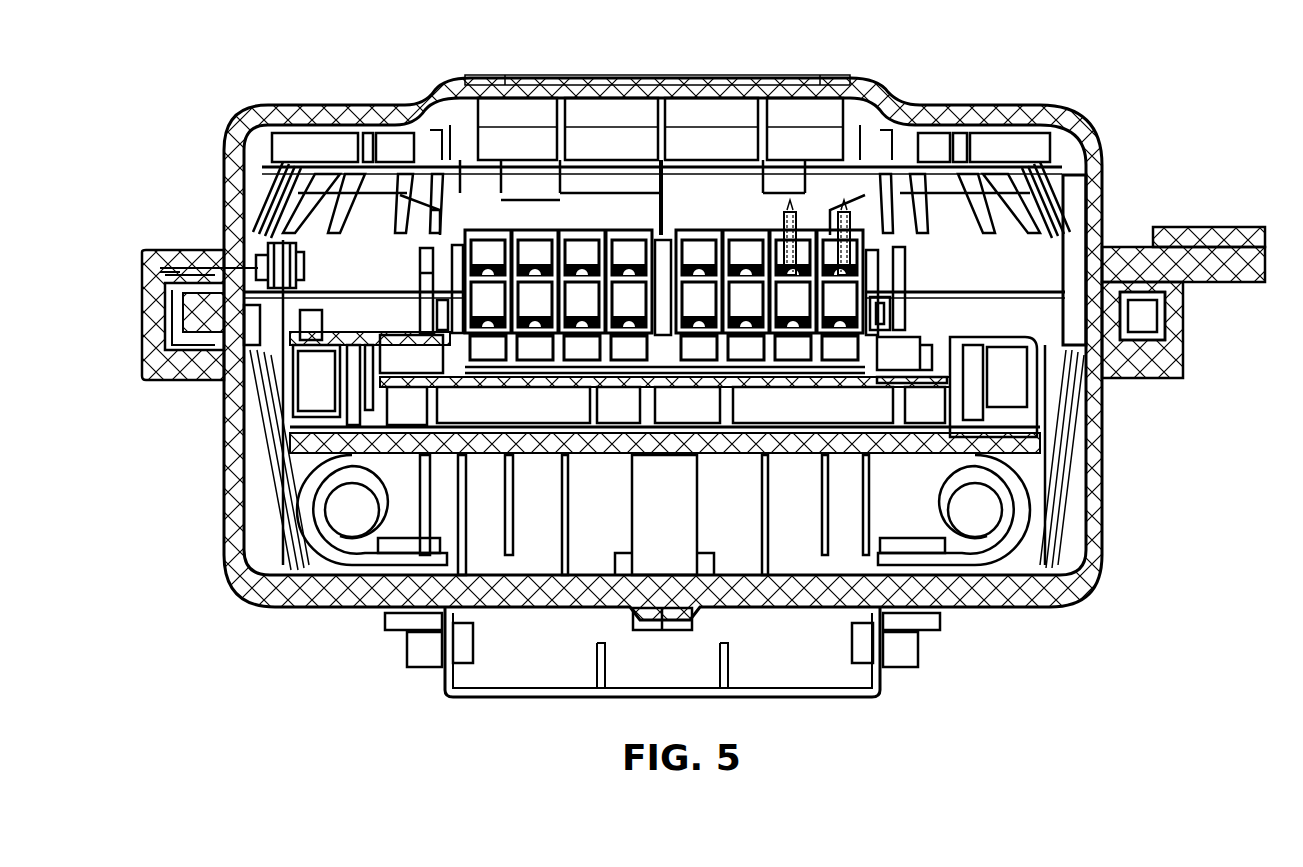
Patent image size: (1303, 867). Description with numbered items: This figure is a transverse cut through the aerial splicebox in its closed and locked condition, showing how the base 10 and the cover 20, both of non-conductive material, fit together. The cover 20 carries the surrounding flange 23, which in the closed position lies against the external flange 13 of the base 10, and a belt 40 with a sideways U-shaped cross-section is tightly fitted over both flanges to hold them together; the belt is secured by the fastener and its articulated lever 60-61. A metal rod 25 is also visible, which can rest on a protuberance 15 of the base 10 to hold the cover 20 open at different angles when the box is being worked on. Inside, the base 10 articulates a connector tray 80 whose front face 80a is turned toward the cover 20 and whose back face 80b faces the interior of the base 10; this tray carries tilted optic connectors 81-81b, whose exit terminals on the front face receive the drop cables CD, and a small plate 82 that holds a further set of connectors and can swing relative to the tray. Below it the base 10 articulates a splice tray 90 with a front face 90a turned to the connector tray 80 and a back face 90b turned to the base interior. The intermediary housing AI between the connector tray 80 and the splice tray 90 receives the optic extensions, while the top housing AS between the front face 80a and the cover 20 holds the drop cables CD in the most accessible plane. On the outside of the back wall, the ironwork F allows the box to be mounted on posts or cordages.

The base 10 is at (1090, 594).
The cover 20 is at (1102, 102).
The external flange 13 is at (1130, 356).
The protuberance 15 is at (290, 316).
The surrounding flange 23 is at (1132, 266).
The metal rod 25 is at (258, 268).
The belt 40 is at (173, 252).
The fastener with articulated lever 60-61 is at (1222, 227).
The connector tray 80 is at (979, 332).
The front face of connector tray 80a is at (928, 362).
The back face of connector tray 80b is at (893, 403).
The optic connectors with exit terminals 81-81b is at (634, 294).
The small plate 82 is at (905, 262).
The splice tray 90 is at (716, 460).
The front face of splice tray 90a is at (593, 430).
The back face of splice tray 90b is at (560, 399).
The top housing AS is at (351, 243).
The intermediary housing AI is at (522, 462).
The drop cables CD is at (790, 200).
The ironwork F is at (758, 690).